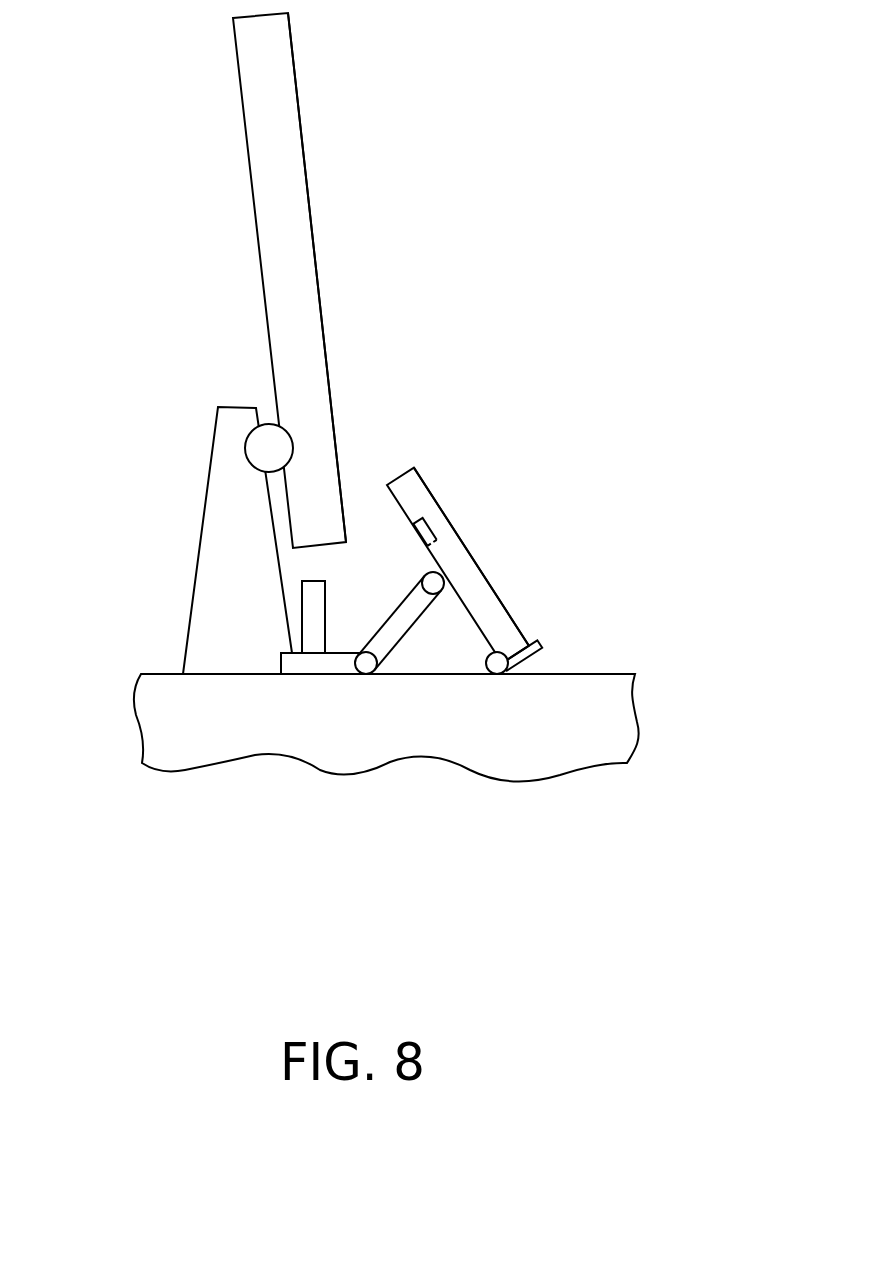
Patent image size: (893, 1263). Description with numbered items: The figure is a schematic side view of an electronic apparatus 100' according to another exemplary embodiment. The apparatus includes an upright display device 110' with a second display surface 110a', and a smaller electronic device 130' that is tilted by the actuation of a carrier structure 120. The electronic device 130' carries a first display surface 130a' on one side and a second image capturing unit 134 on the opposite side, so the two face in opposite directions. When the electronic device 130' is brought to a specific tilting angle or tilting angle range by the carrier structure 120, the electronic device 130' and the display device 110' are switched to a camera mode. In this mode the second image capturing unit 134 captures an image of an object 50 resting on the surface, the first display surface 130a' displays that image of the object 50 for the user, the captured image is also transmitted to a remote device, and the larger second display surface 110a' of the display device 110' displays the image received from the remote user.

The electronic apparatus 100' is at (419, 450).
The display device 110' is at (233, 280).
The second display surface 110a' is at (365, 277).
The carrier structure 120 is at (372, 598).
The electronic device 130' is at (496, 571).
The first display surface 130a' is at (491, 534).
The second image capturing unit 134 is at (415, 534).
The object 50 is at (312, 645).